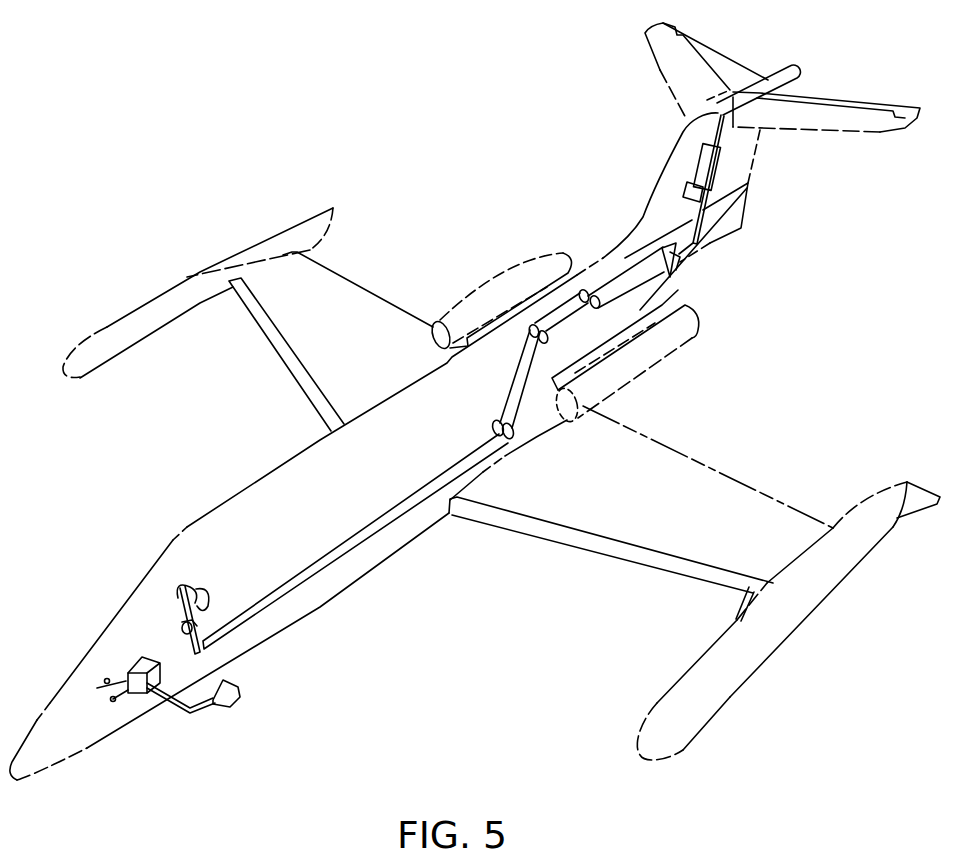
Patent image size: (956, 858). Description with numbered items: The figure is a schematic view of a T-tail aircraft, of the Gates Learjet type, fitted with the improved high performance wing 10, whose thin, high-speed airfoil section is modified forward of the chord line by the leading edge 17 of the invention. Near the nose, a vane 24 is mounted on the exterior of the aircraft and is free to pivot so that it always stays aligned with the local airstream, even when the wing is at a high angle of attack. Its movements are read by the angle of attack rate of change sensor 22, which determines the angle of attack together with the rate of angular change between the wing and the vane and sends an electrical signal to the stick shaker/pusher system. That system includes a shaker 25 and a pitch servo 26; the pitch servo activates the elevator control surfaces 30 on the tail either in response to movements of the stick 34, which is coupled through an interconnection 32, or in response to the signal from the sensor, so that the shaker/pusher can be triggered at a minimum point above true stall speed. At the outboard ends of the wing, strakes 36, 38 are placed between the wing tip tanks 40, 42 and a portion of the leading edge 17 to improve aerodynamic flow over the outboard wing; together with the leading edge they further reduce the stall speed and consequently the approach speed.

The high performance wing 10 is at (412, 268).
The leading edge 17 is at (262, 411).
The angle of attack rate of change sensor 22 is at (133, 693).
The vane 24 is at (227, 705).
The shaker 25 is at (182, 632).
The pitch servo 26 is at (688, 187).
The elevator control surfaces 30 is at (713, 52).
The interconnection 32 is at (327, 547).
The stick 34 is at (200, 593).
The strake 36 is at (217, 293).
The strake 38 is at (747, 602).
The wing tip tank 40 is at (137, 308).
The wing tip tank 42 is at (727, 693).